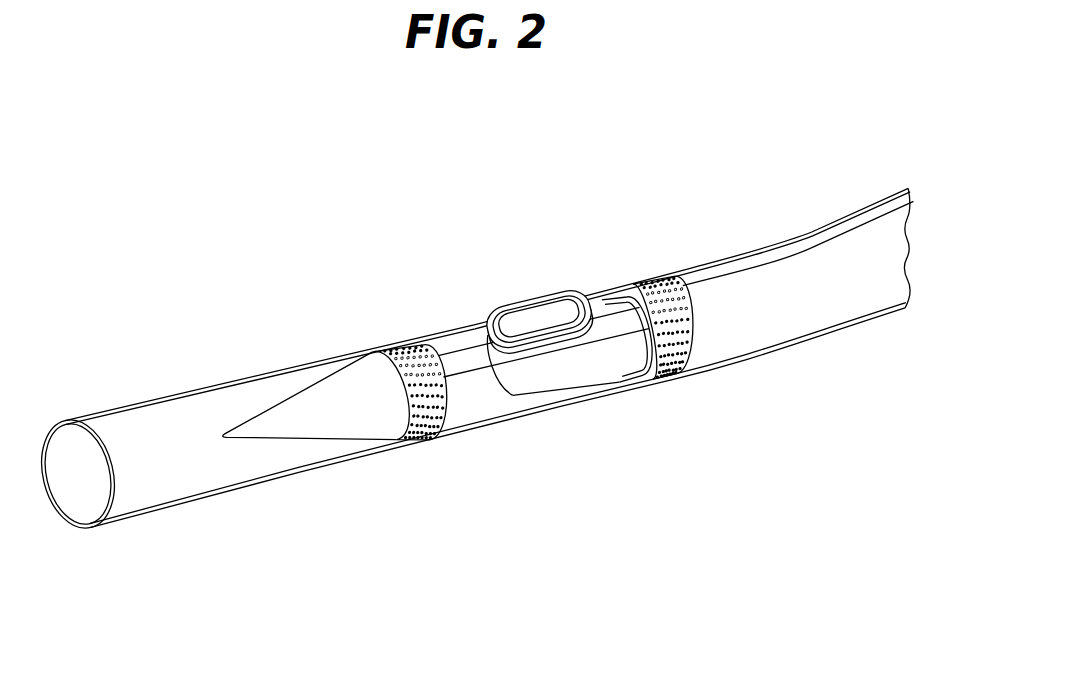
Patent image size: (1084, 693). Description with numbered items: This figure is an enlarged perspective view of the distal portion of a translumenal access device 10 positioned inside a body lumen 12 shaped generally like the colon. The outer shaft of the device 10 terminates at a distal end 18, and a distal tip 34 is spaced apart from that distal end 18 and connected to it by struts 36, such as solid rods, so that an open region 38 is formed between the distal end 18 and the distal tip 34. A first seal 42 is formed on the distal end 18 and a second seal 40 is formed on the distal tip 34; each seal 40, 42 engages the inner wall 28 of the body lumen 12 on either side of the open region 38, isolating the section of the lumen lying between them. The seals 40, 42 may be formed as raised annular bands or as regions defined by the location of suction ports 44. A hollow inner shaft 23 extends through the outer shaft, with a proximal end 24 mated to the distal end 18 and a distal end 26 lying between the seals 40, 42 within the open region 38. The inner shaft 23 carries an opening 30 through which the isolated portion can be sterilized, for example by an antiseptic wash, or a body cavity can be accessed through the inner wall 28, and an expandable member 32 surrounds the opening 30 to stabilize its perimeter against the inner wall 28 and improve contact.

The translumenal access device 10 is at (219, 203).
The body lumen 12 is at (63, 487).
The distal end 18 is at (663, 290).
The hollow inner shaft 23 is at (590, 367).
The proximal end 24 is at (655, 381).
The distal end 26 is at (520, 380).
The inner wall 28 is at (257, 372).
The opening 30 is at (538, 308).
The expandable member 32 is at (487, 315).
The distal tip 34 is at (298, 420).
The struts 36 is at (512, 421).
The open region 38 is at (405, 312).
The second seal 40 is at (432, 445).
The first seal 42 is at (676, 382).
The suction ports 44 is at (410, 445).